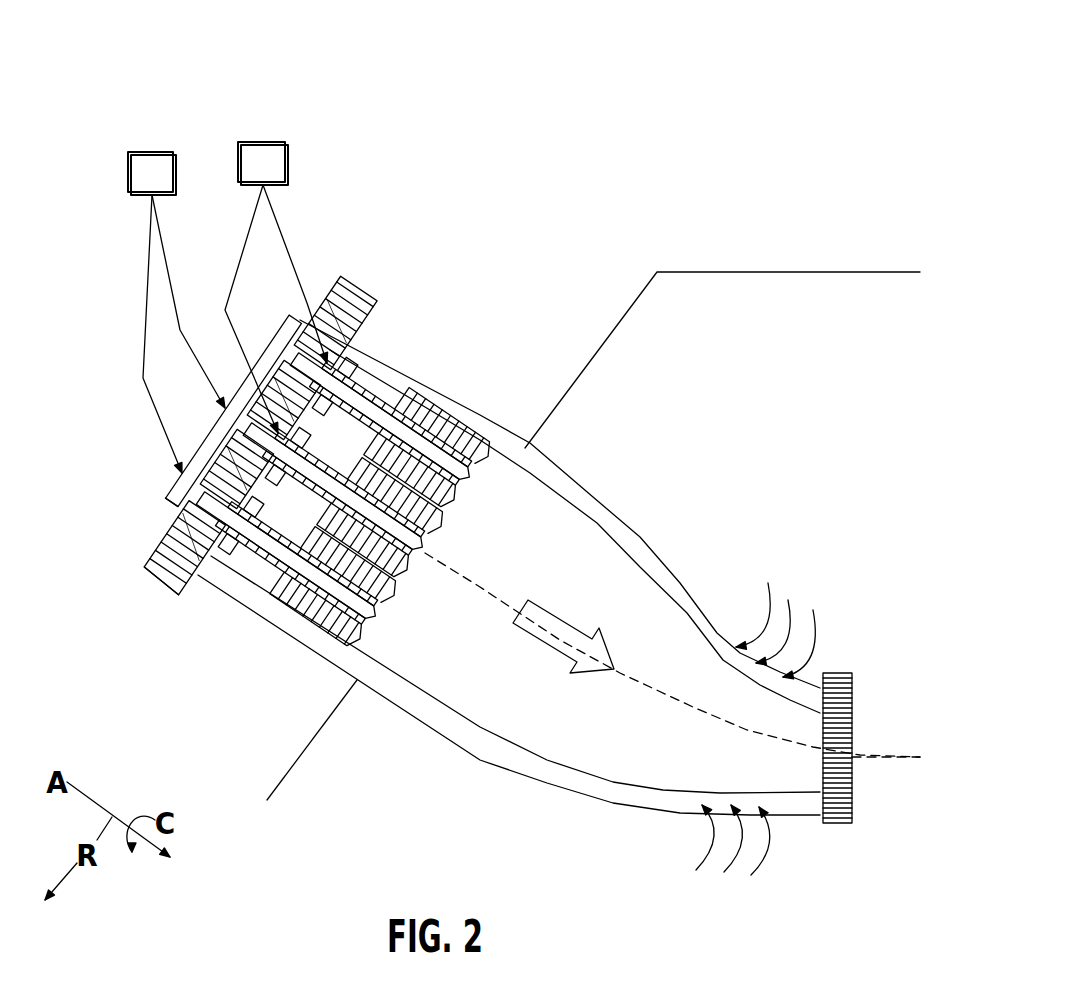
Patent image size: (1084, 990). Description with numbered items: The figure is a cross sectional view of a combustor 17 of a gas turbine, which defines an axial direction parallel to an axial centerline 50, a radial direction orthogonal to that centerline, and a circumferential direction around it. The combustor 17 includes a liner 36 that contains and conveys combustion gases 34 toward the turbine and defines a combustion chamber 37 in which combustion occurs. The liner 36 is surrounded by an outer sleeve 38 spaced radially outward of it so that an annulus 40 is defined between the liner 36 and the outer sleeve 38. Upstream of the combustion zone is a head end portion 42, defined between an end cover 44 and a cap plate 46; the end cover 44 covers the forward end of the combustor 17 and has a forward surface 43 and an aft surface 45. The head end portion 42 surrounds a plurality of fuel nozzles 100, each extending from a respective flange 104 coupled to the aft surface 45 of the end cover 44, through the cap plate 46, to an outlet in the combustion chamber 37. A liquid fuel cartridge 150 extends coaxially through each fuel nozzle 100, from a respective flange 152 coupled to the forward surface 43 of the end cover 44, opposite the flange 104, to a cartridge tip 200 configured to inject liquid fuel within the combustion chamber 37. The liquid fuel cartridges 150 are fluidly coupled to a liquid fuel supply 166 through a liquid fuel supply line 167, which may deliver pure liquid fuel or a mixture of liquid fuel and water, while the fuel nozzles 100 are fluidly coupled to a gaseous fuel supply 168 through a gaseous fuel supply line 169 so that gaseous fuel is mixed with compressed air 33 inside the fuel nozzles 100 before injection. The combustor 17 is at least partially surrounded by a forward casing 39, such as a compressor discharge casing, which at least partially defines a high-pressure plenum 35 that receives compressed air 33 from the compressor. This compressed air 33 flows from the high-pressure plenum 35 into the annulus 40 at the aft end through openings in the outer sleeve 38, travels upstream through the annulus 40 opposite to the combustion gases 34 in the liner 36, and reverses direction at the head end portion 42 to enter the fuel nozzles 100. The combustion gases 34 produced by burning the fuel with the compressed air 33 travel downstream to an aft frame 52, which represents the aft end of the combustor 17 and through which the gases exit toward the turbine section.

The combustor 17 is at (383, 97).
The compressed air 33 is at (813, 652).
The combustion gases 34 is at (568, 610).
The high-pressure plenum 35 is at (729, 395).
The liner 36 is at (478, 725).
The combustion chamber 37 is at (474, 555).
The outer sleeve 38 is at (598, 493).
The forward casing 39 is at (738, 270).
The annulus 40 is at (552, 776).
The head end portion 42 is at (287, 600).
The forward surface 43 is at (150, 562).
The end cover 44 is at (155, 590).
The aft surface 45 is at (180, 596).
The cap plate 46 is at (505, 442).
The axial centerline 50 is at (890, 755).
The aft frame 52 is at (852, 698).
The fuel nozzle 100 is at (428, 385).
The flange 104 is at (357, 367).
The liquid fuel cartridge 150 is at (452, 412).
The flange 152 is at (290, 335).
The liquid fuel supply 166 is at (169, 187).
The liquid fuel supply line 167 is at (168, 293).
The gaseous fuel supply 168 is at (281, 177).
The gaseous fuel supply line 169 is at (247, 233).
The cartridge tip 200 is at (475, 478).